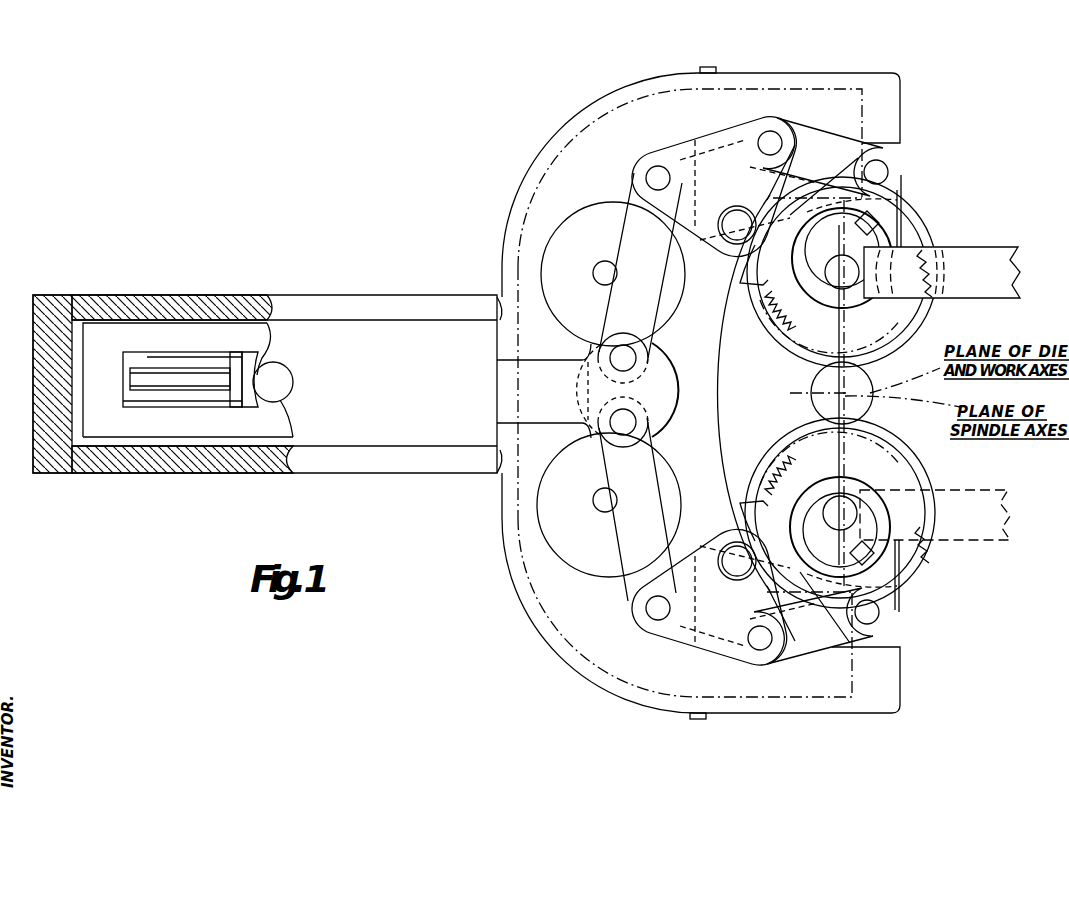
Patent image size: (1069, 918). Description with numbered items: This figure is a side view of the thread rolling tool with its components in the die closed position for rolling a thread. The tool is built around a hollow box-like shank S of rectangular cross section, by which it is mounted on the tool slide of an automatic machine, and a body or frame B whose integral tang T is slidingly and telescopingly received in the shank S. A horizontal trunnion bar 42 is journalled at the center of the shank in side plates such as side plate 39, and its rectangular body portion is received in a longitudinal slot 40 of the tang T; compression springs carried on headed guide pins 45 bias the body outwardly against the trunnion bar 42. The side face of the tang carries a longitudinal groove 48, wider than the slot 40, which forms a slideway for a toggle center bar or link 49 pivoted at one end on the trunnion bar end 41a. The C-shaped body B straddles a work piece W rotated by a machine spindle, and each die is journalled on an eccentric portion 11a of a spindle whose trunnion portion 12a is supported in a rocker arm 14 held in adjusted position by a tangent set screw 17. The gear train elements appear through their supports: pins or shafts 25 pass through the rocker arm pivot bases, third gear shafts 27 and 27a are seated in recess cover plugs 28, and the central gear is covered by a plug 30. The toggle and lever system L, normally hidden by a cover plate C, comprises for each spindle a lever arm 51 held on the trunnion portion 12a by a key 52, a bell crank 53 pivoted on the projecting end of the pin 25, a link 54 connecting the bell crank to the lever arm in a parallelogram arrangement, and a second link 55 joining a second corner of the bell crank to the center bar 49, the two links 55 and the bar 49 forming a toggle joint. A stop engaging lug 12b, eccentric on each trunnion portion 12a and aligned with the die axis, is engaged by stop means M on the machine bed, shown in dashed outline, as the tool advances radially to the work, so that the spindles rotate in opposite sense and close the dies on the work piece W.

The eccentric portion 11a is at (867, 322).
The trunnion portion 12a is at (872, 556).
The stop engaging lug 12b is at (845, 500).
The rocker arm 14 is at (797, 612).
The tangent set screw 17 is at (716, 68).
The pin or shaft 25 is at (737, 248).
The shaft 27 is at (603, 268).
The lower shaft 27a is at (602, 500).
The recess cover plug 28 is at (572, 218).
The plug 30 is at (665, 366).
The side plate 39 is at (345, 438).
The tang slot 40 is at (146, 362).
The trunnion bar end 41a is at (270, 388).
The trunnion bar 42 is at (243, 357).
The headed guide pin 45 is at (172, 372).
The longitudinal groove 48 is at (148, 352).
The toggle center bar or link 49 is at (260, 355).
The lever arm 51 is at (898, 163).
The key 52 is at (878, 216).
The bell crank 53 is at (698, 630).
The link 54 is at (845, 106).
The second link 55 is at (660, 322).
The body or frame B is at (598, 690).
The cover plate C is at (528, 612).
The toggle and lever system L is at (688, 132).
The stop means M is at (997, 249).
The shank S is at (433, 477).
The tang T is at (181, 420).
The work piece W is at (812, 372).